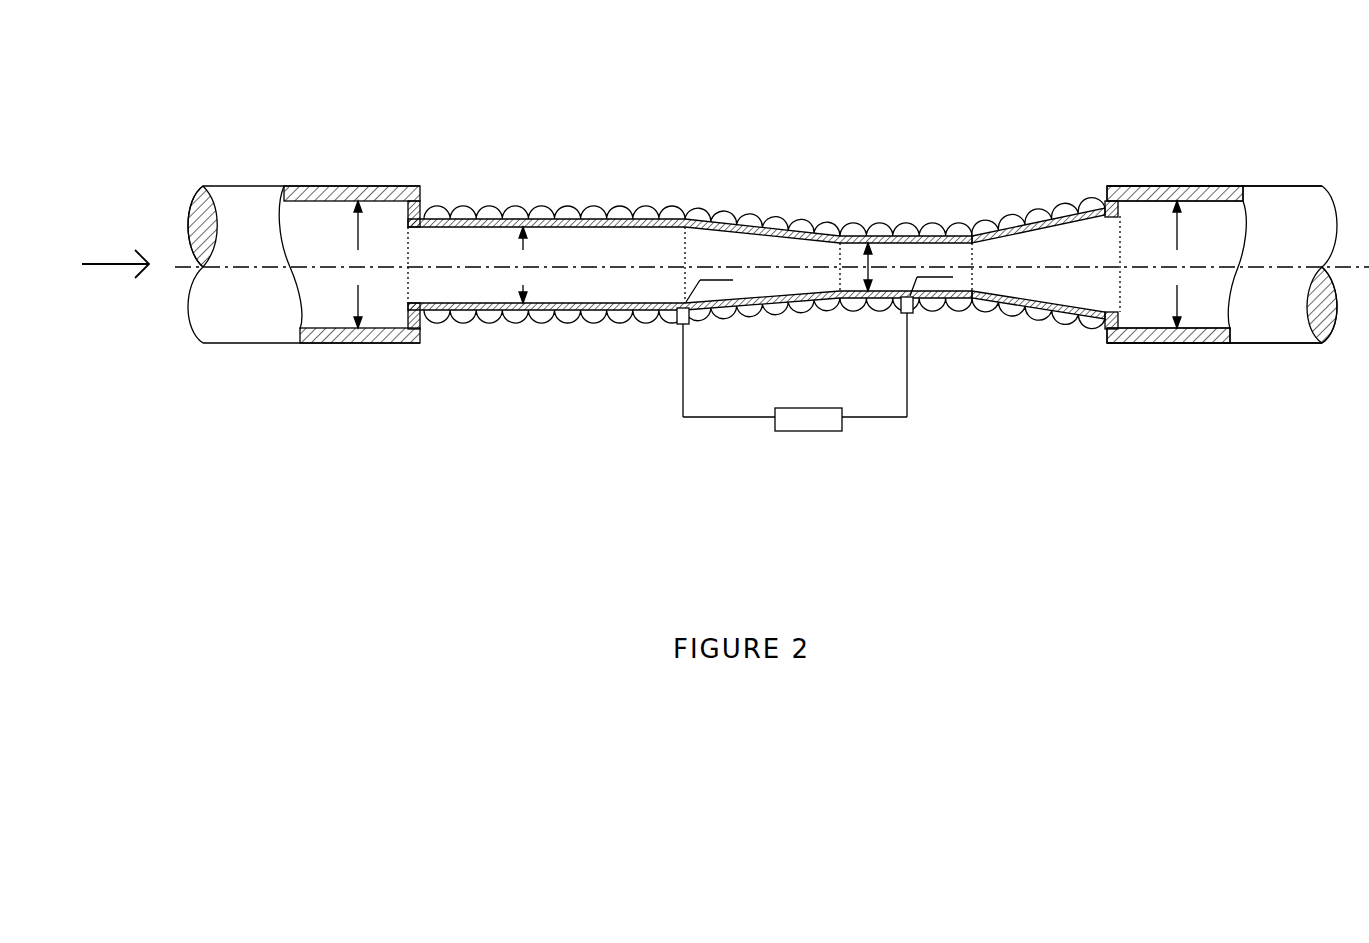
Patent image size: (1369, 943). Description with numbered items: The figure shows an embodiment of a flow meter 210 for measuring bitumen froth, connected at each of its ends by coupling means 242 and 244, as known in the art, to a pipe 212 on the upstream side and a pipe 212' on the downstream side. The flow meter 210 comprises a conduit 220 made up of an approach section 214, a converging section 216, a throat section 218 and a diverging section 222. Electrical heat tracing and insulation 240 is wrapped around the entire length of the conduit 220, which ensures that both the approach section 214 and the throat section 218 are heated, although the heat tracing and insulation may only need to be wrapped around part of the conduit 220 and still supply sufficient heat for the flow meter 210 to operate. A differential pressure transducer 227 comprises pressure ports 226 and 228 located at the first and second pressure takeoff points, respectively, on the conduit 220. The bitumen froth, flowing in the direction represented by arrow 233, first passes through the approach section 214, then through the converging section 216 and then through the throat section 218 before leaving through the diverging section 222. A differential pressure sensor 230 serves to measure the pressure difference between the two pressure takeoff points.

The flow meter 210 is at (927, 187).
The pipe 212 is at (304, 330).
The pipe 212' is at (1222, 213).
The approach section 214 is at (577, 215).
The converging section 216 is at (782, 217).
The throat section 218 is at (960, 213).
The conduit 220 is at (722, 215).
The diverging section 222 is at (1057, 212).
The pressure port 226 is at (677, 325).
The differential pressure transducer 227 is at (723, 431).
The pressure port 228 is at (913, 313).
The differential pressure sensor 230 is at (810, 432).
The arrow 233 is at (91, 264).
The electrical heat tracing and insulation 240 is at (866, 213).
The coupling means 242 is at (422, 210).
The coupling means 244 is at (1105, 327).